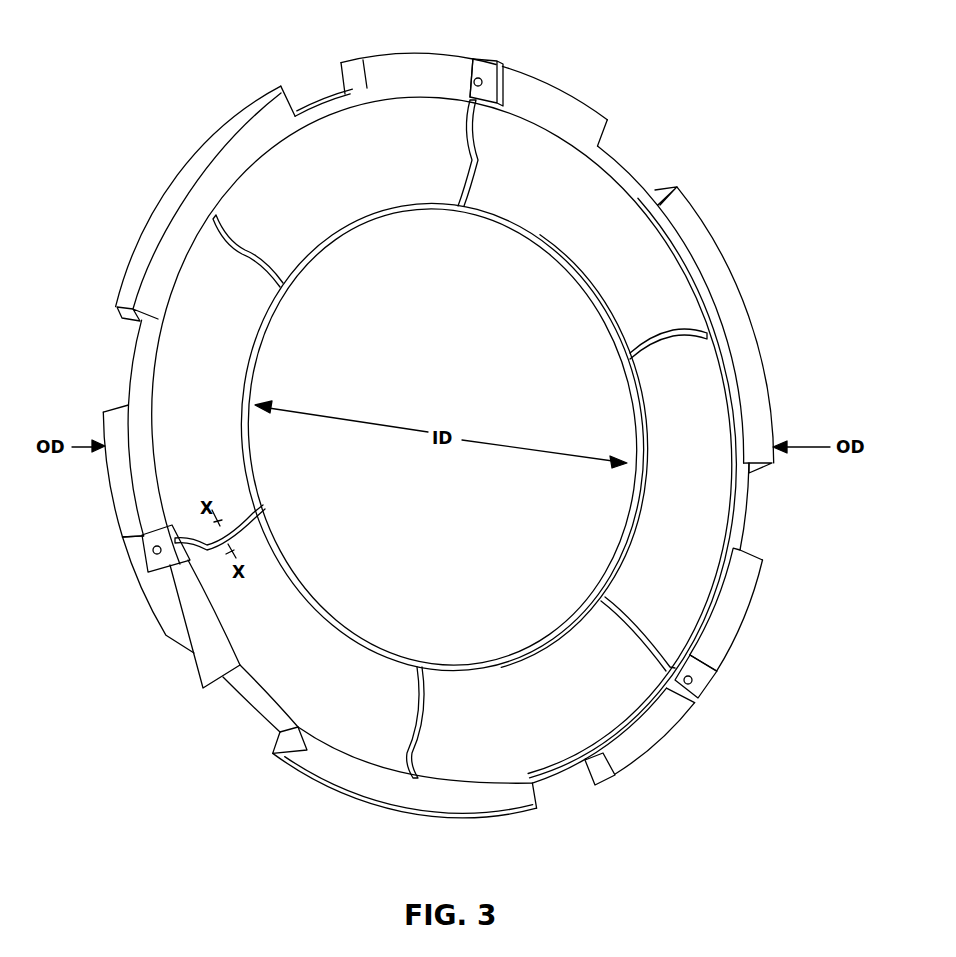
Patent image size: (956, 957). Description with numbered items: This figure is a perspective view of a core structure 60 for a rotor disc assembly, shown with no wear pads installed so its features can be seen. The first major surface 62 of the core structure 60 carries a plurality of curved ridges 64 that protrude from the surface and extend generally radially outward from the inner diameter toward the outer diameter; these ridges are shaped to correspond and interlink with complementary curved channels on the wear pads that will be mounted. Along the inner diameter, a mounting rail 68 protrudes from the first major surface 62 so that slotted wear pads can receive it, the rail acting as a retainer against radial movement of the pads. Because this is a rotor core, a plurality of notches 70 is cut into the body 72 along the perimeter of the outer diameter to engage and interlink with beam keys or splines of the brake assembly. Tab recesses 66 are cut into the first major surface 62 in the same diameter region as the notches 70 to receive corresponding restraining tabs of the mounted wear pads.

The core structure 60 is at (138, 47).
The first major surface 62 is at (354, 170).
The curved ridges 64 is at (468, 140).
The tab recesses 66 is at (138, 545).
The mounting rail 68 is at (333, 234).
The notches 70 is at (321, 82).
The body 72 is at (187, 597).